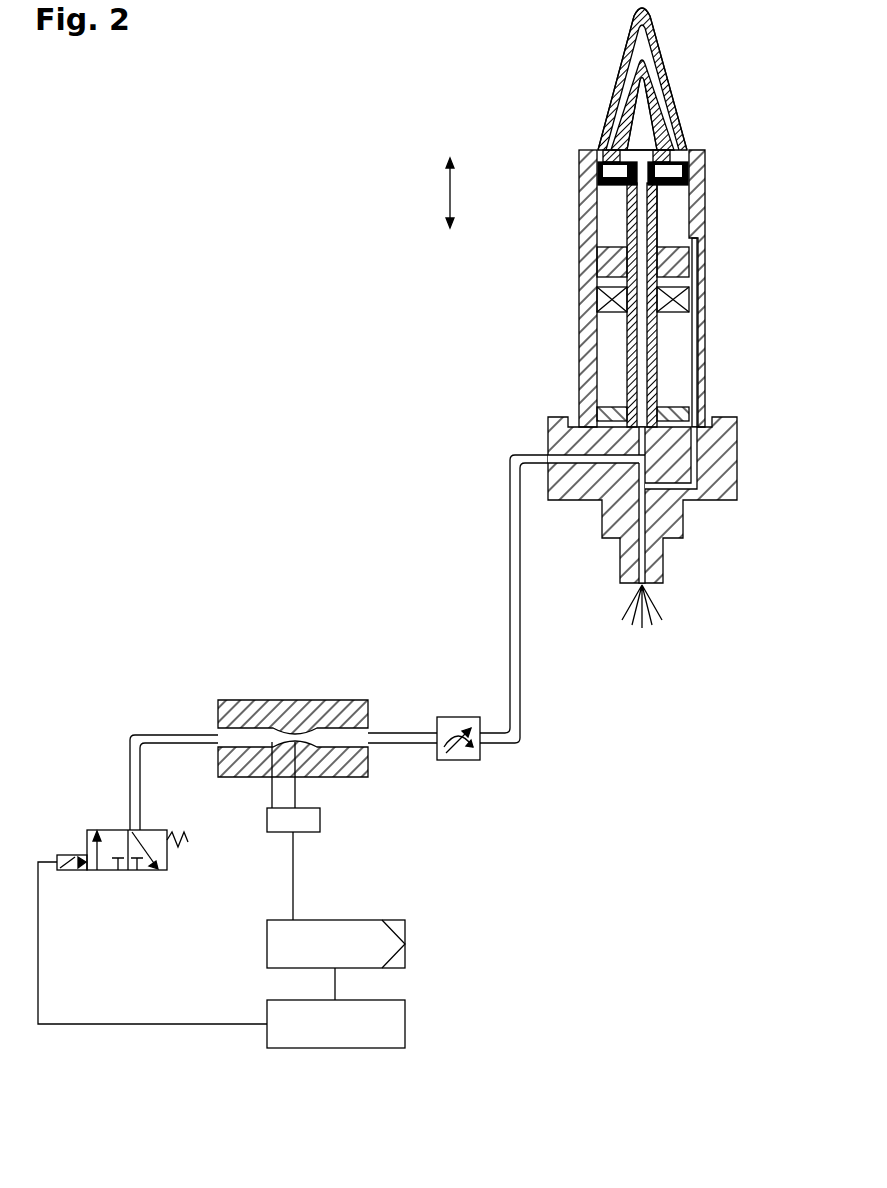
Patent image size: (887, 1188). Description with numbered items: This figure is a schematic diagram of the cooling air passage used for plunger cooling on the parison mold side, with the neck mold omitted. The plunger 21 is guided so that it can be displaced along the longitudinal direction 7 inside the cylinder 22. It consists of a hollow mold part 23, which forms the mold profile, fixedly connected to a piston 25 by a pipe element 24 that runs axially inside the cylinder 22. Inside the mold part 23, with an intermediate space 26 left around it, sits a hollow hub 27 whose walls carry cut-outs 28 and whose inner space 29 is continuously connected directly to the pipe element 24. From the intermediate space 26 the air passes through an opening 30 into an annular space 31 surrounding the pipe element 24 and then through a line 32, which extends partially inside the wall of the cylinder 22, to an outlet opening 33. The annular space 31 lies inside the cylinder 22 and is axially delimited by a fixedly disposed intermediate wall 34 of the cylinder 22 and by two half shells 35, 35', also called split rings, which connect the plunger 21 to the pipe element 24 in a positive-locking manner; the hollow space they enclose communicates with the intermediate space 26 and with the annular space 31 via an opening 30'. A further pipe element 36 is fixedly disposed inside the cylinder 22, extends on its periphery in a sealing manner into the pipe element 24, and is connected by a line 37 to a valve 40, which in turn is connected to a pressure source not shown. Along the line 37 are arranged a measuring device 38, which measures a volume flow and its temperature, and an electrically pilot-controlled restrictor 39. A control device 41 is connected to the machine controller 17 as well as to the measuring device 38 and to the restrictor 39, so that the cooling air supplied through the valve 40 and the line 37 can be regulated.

The longitudinal direction 7 is at (450, 193).
The machine controller 17 is at (405, 1022).
The plunger 21 is at (626, 80).
The cylinder 22 is at (590, 232).
The hollow mold part 23 is at (634, 20).
The pipe element 24 is at (643, 240).
The piston 25 is at (602, 305).
The intermediate space 26 is at (650, 66).
The hollow hub 27 is at (608, 148).
The cut-outs 28 is at (650, 125).
The inner space 29 is at (636, 120).
The opening 30 is at (714, 125).
The opening 30' is at (714, 303).
The annular space 31 is at (666, 222).
The line 32 is at (696, 332).
The outlet opening 33 is at (645, 587).
The intermediate wall 34 is at (673, 262).
The half shell 35 is at (712, 165).
The half shell 35' is at (571, 186).
The further pipe element 36 is at (645, 366).
The line 37 is at (510, 508).
The measuring device 38 is at (292, 715).
The restrictor 39 is at (452, 722).
The valve 40 is at (107, 830).
The control device 41 is at (405, 930).